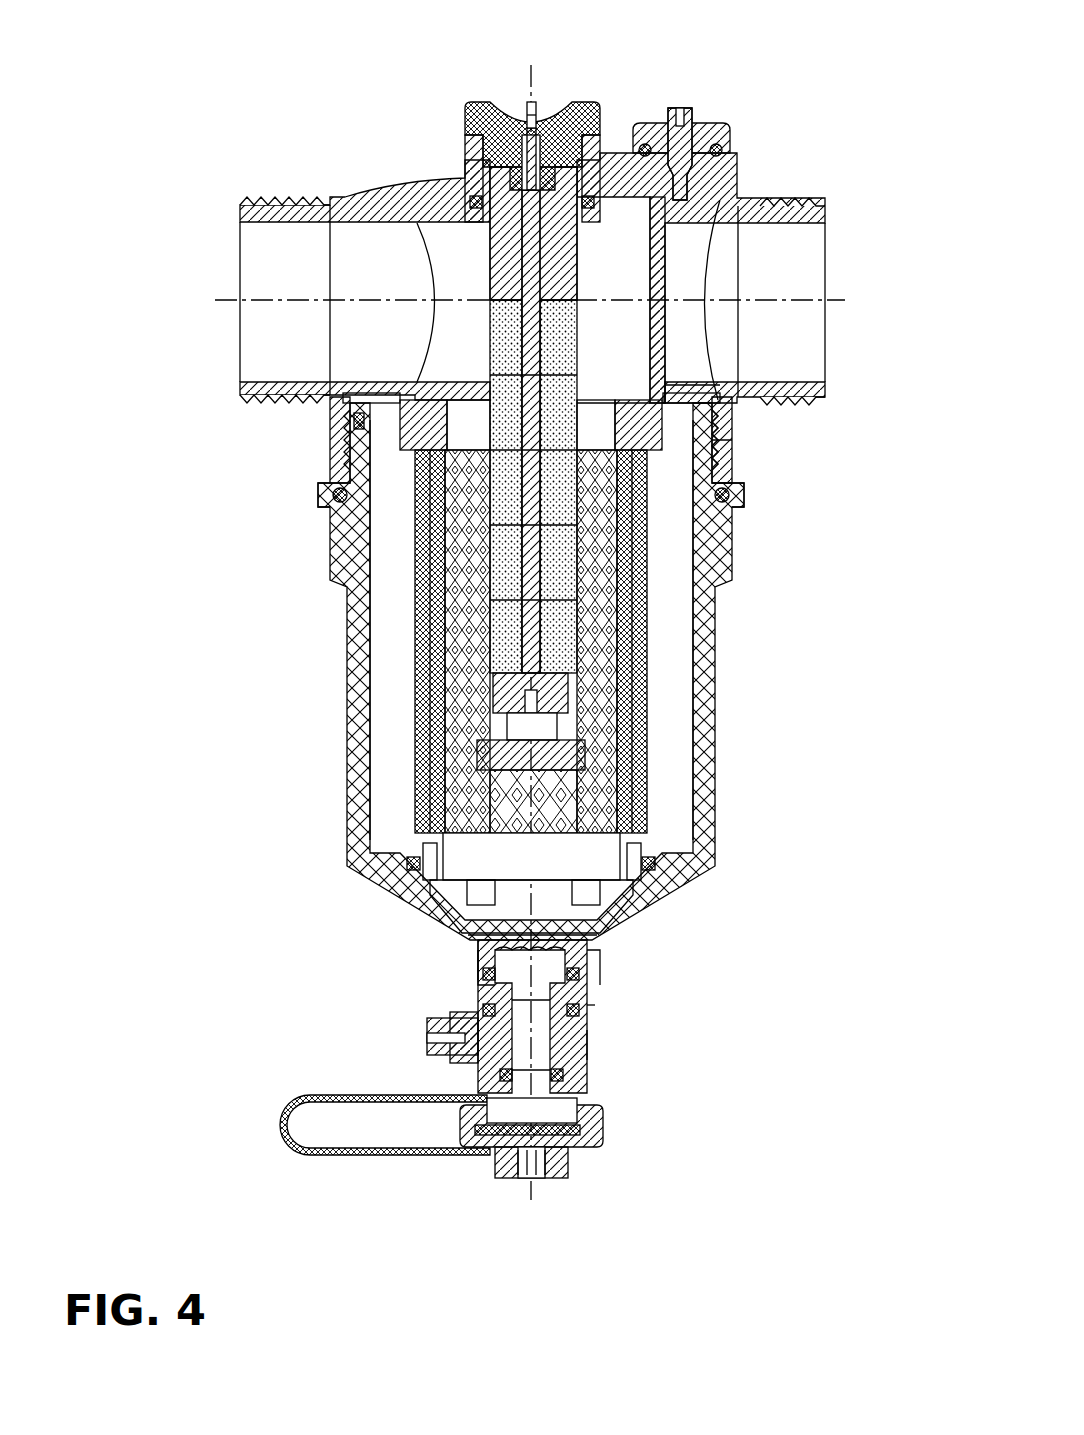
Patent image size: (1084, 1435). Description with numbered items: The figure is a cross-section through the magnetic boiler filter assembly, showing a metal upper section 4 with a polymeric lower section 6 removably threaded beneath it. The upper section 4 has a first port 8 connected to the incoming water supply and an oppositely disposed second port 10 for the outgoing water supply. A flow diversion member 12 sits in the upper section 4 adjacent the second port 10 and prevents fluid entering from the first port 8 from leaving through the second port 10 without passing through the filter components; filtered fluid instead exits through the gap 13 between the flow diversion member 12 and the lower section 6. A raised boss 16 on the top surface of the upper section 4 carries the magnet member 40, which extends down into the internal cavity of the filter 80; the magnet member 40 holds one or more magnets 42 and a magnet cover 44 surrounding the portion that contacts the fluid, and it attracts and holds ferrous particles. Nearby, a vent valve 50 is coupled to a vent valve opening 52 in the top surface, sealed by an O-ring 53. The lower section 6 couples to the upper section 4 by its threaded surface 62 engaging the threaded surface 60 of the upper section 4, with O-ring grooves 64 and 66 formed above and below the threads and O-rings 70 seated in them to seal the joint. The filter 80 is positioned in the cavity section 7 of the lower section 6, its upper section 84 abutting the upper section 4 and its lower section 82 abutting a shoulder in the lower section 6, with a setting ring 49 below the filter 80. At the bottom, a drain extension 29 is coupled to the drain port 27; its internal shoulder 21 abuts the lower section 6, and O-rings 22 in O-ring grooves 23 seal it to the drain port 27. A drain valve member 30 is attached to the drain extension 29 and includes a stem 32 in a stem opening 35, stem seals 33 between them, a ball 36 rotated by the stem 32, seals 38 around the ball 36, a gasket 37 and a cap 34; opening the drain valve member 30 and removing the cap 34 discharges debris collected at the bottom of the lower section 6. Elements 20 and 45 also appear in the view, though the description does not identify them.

The upper section 4 is at (737, 410).
The lower section 6 is at (717, 740).
The cavity section 7 is at (665, 665).
The first port 8 is at (240, 336).
The second port 10 is at (830, 340).
The flow diversion member 12 is at (658, 272).
The gap 13 is at (680, 410).
The raised boss 16 is at (468, 152).
The drain body 20 is at (488, 1008).
The internal shoulder 21 is at (595, 965).
The O-rings 22 is at (492, 973).
The O-ring grooves 23 is at (482, 958).
The drain port 27 is at (600, 975).
The drain extension 29 is at (595, 1010).
The drain valve member 30 is at (600, 1125).
The stem 32 is at (452, 1045).
The stem seals 33 is at (470, 1098).
The cap 34 is at (512, 1165).
The stem opening 35 is at (490, 1020).
The ball 36 is at (588, 1040).
The gasket 37 is at (575, 1162).
The seals 38 is at (590, 1030).
The magnet member 40 is at (578, 100).
The magnets 42 is at (405, 413).
The magnet cover 44 is at (487, 258).
The seal ring 45 is at (478, 198).
The setting ring 49 is at (585, 890).
The vent valve 50 is at (698, 118).
The vent valve opening 52 is at (730, 165).
The O-ring 53 is at (712, 125).
The threaded surface 60 is at (745, 485).
The threaded surface 62 is at (745, 505).
The O-ring groove 64 is at (742, 515).
The O-ring groove 66 is at (345, 420).
The O-rings 70 is at (740, 455).
The filter 80 is at (415, 680).
The lower section of filter 82 is at (413, 860).
The upper section of filter 84 is at (445, 452).